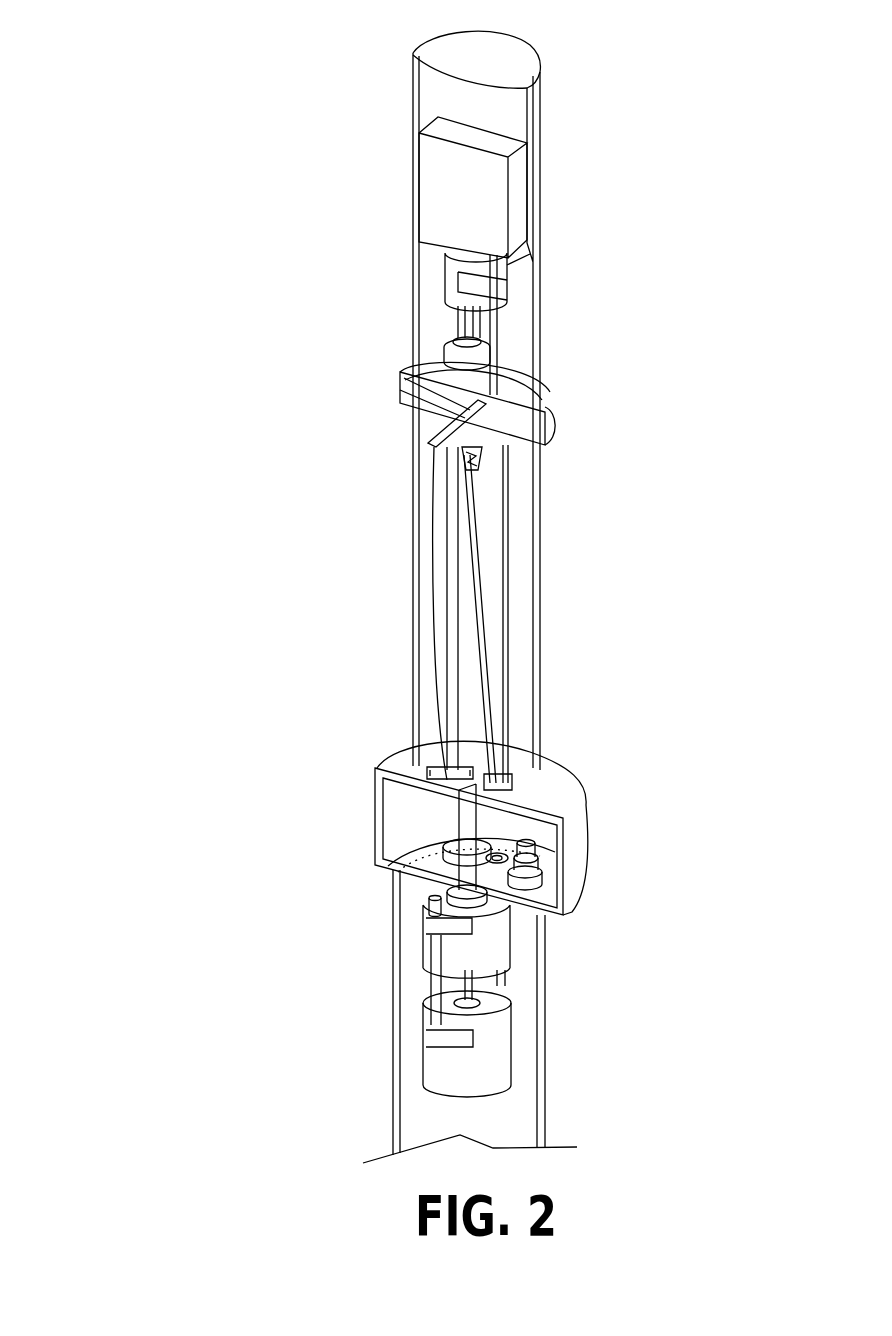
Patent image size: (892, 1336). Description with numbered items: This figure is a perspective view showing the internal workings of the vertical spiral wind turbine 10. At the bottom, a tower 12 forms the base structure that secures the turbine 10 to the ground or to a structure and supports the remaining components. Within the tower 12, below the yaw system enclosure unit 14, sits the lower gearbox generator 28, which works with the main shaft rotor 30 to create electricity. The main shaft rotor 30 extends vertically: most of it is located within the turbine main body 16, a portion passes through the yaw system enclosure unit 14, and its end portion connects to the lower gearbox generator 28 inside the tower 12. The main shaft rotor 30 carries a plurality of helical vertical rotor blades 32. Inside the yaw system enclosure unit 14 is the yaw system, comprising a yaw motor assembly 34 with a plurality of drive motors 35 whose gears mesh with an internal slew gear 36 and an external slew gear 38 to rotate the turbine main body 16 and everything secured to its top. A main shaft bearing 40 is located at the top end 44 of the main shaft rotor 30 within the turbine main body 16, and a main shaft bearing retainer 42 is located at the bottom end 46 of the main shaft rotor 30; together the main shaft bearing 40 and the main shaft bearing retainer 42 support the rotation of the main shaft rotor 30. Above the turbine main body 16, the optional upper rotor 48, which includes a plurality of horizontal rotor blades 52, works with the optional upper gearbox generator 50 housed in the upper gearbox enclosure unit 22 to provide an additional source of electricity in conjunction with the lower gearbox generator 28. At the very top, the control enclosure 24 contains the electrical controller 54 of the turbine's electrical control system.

The vertical wind turbine 10 is at (138, 116).
The tower 12 is at (543, 1108).
The yaw system enclosure unit 14 is at (573, 828).
The turbine main body 16 is at (535, 651).
The upper gearbox enclosure unit 22 is at (530, 304).
The control enclosure 24 is at (540, 128).
The lower gearbox generator 28 is at (492, 1033).
The main shaft rotor 30 is at (455, 826).
The helical vertical rotor blades 32 is at (472, 548).
The yaw motor assembly 34 is at (545, 888).
The drive motors 35 is at (536, 848).
The internal slew gear 36 is at (430, 912).
The external slew gear 38 is at (415, 877).
The main shaft bearing 40 is at (484, 456).
The main shaft bearing retainer 42 is at (506, 790).
The top end 44 is at (440, 425).
The bottom end 46 is at (420, 766).
The upper rotor 48 is at (518, 395).
The upper gearbox generator 50 is at (445, 270).
The horizontal rotor blades 52 is at (468, 379).
The electrical controller 54 is at (446, 171).